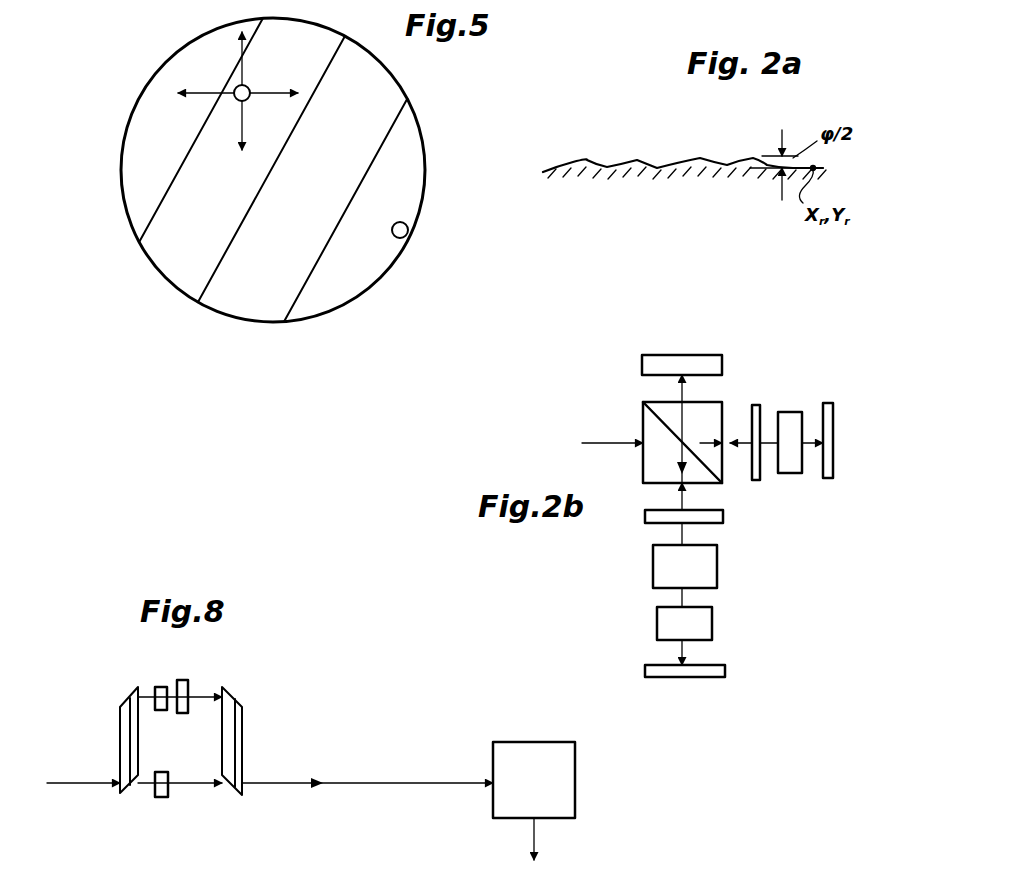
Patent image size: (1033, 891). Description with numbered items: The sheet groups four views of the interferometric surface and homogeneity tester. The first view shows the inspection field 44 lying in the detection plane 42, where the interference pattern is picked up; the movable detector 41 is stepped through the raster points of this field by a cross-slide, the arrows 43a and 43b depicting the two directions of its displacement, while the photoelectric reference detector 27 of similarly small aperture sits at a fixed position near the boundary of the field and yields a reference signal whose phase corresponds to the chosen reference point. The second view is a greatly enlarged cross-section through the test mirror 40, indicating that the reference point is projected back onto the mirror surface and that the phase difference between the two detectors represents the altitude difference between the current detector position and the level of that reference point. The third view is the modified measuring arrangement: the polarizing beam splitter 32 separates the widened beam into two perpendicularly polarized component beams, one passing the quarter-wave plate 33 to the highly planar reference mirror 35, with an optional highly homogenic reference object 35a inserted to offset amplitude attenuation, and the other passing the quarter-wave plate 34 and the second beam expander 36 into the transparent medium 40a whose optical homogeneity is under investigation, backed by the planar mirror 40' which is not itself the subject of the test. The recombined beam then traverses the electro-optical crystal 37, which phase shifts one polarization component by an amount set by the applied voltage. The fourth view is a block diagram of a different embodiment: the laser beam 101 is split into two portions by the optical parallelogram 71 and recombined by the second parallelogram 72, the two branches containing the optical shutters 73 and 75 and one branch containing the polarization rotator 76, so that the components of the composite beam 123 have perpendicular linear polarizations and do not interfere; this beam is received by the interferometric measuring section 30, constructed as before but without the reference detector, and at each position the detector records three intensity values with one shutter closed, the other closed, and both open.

In FIG. 5, the inspection field 44 is at (360, 288).
In FIG. 5, the detection plane 42 is at (403, 167).
In FIG. 5, the arrow depicting detector displacement 43a is at (243, 63).
In FIG. 5, the arrow depicting detector displacement 43b is at (277, 98).
In FIG. 5, the detector 41 is at (252, 88).
In FIG. 5, the photoelectric reference detector 27 is at (408, 227).
In FIG. 2A, the mirror 40 is at (684, 187).
In FIG. 2B, the electro-optical crystal 37 is at (700, 360).
In FIG. 2B, the polarizing beam splitter 32 is at (690, 418).
In FIG. 2B, the λ/4 plate 33 is at (757, 410).
In FIG. 2B, the reference mirror 35 is at (832, 417).
In FIG. 2B, the reference object 35a is at (790, 468).
In FIG. 2B, the λ/4 plate 34 is at (650, 523).
In FIG. 2B, the second beam expander 36 is at (702, 568).
In FIG. 2B, the transparent medium 40a is at (703, 625).
In FIG. 2B, the mirror 40' is at (699, 687).
In FIG. 8, the laser beam 101 is at (62, 785).
In FIG. 8, the optical parallelogram 71 is at (125, 715).
In FIG. 8, the second parallelogram 72 is at (240, 725).
In FIG. 8, the optical shutter 73 is at (157, 685).
In FIG. 8, the polarization rotator 76 is at (187, 678).
In FIG. 8, the optical shutter 75 is at (157, 798).
In FIG. 8, the composite beam 123 is at (262, 782).
In FIG. 8, the interferometric measuring section 30 is at (557, 767).